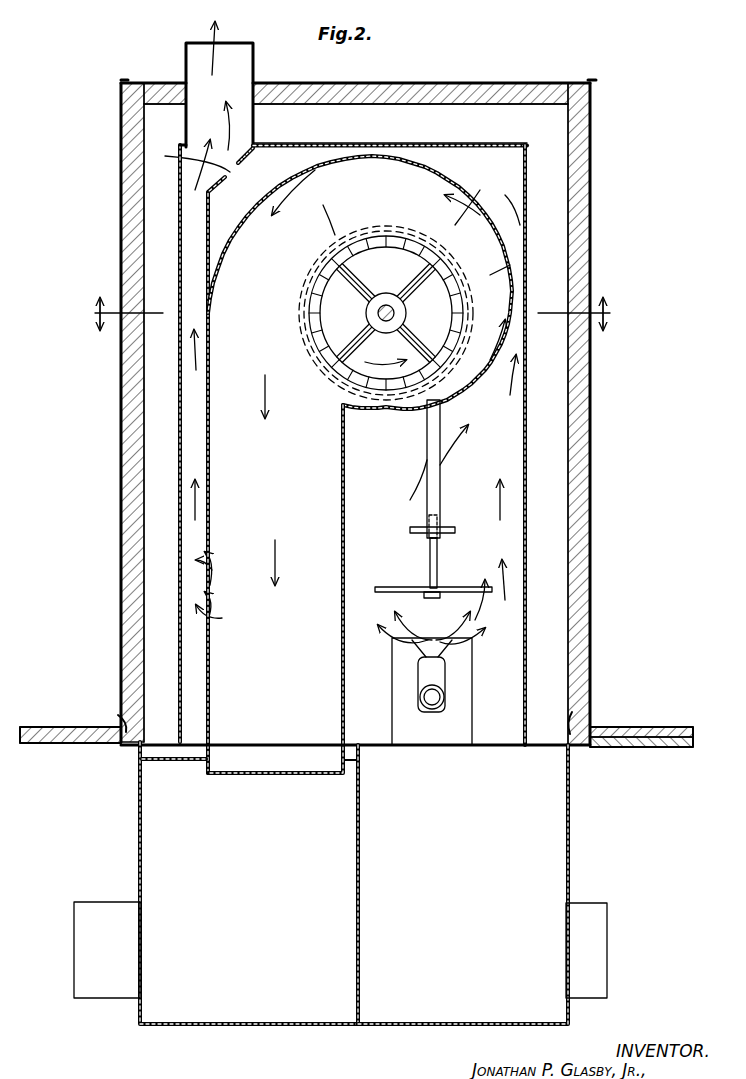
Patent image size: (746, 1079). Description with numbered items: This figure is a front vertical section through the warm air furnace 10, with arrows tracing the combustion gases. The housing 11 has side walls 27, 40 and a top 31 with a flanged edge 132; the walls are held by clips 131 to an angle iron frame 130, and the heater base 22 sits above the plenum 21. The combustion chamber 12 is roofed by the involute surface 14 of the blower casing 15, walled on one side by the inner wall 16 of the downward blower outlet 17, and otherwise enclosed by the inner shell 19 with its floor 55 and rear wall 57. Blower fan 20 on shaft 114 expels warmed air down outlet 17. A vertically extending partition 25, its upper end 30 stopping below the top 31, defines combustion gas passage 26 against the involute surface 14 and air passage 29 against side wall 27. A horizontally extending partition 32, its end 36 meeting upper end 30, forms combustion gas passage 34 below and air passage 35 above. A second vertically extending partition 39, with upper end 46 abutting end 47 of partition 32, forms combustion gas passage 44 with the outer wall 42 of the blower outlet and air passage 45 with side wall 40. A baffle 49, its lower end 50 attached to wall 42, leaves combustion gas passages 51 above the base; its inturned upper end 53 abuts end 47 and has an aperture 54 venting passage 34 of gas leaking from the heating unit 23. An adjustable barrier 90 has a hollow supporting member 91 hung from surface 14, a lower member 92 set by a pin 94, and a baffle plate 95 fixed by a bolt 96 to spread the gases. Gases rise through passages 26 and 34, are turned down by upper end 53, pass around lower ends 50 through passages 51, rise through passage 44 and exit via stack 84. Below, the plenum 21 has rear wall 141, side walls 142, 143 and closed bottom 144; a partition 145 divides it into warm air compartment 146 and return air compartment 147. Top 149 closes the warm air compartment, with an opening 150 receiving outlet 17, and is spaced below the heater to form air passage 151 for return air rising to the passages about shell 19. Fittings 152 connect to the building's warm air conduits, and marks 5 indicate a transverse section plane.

The section line 5- 5 is at (348, 314).
The warm air furnace 10 is at (359, 397).
The housing 11 is at (510, 92).
The combustion chamber 12 is at (515, 612).
The involute surface 14 is at (468, 386).
The blower casing 15 is at (487, 270).
The inner wall 16 is at (345, 552).
The blower outlet 17 is at (312, 525).
The inner shell 19 is at (527, 452).
The blower fan 20 is at (382, 234).
The plenum 21 is at (354, 903).
The base 22 is at (128, 748).
The heating unit 23 is at (436, 682).
The vertically extending partition 25 is at (527, 532).
The combustion gas passage 26 is at (512, 333).
The side wall 27 is at (580, 258).
The air passage 29 is at (550, 400).
The upper end 30 is at (527, 165).
The top 31 is at (418, 96).
The horizontally extending partition 32 is at (398, 144).
The combustion gas passage 34 is at (365, 150).
The air passage 35 is at (338, 110).
The end 36 is at (512, 144).
The second vertically extending partition 39 is at (178, 362).
The side wall 40 is at (130, 362).
The outer wall 42 is at (210, 418).
The combustion gas passage 44 is at (178, 450).
The air passage 45 is at (140, 490).
The upper end 46 is at (178, 182).
The end 47 is at (262, 144).
The baffle 49 is at (206, 249).
The lower end 50 is at (218, 568).
The combustion gas passages 51 is at (216, 606).
The baffle upper end 53 is at (247, 156).
The aperture 54 is at (188, 156).
The floor 55 is at (488, 748).
The rear wall 57 is at (527, 150).
The stack 84 is at (254, 70).
The adjustable barrier 90 is at (441, 498).
The supporting hollow member 91 is at (428, 446).
The lower supporting member 92 is at (438, 556).
The pin 94 is at (452, 531).
The baffle plate 95 is at (460, 587).
The bolt 96 is at (431, 604).
The blower shaft 114 is at (384, 305).
The angle iron frame 130 is at (138, 728).
The clips 131 is at (120, 718).
The flanged edge 132 is at (126, 88).
The rear wall 141 is at (550, 812).
The side wall 142 is at (140, 860).
The side wall 143 is at (570, 857).
The plenum bottom 144 is at (288, 1028).
The partition 145 is at (360, 858).
The warm air compartment 146 is at (215, 1005).
The cold air compartment 147 is at (448, 1005).
The top 149 is at (184, 763).
The opening 150 is at (206, 770).
The air passage 151 is at (158, 752).
The fittings 152 is at (84, 955).